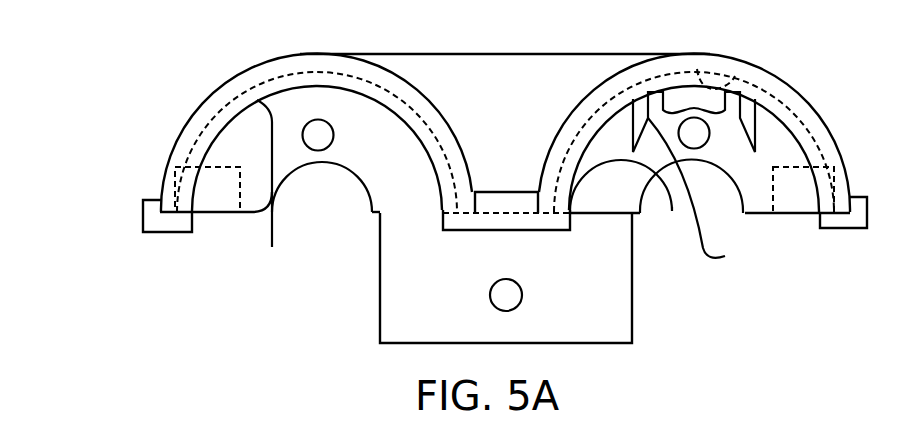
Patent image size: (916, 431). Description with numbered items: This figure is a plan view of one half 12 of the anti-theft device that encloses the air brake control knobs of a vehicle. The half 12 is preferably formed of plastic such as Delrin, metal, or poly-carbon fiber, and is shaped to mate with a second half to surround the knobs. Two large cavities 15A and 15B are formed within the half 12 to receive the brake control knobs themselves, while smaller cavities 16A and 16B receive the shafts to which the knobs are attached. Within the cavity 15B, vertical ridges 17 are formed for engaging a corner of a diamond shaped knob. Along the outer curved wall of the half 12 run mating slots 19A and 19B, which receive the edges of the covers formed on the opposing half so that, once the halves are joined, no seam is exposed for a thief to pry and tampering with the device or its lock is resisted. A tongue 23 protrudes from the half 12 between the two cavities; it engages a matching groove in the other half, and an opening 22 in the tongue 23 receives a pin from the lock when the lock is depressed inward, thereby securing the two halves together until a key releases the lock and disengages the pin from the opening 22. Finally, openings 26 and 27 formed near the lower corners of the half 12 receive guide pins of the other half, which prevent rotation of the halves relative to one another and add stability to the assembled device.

The half 12 is at (800, 93).
The cavity 15A is at (281, 192).
The cavity 15B is at (632, 203).
The cavity 16A is at (313, 162).
The cavity 16B is at (743, 212).
The vertical ridges 17 is at (698, 180).
The mating slot 19A is at (222, 118).
The mating slot 19B is at (733, 80).
The opening 22 is at (505, 293).
The tongue 23 is at (633, 325).
The opening 26 is at (237, 183).
The opening 27 is at (817, 204).